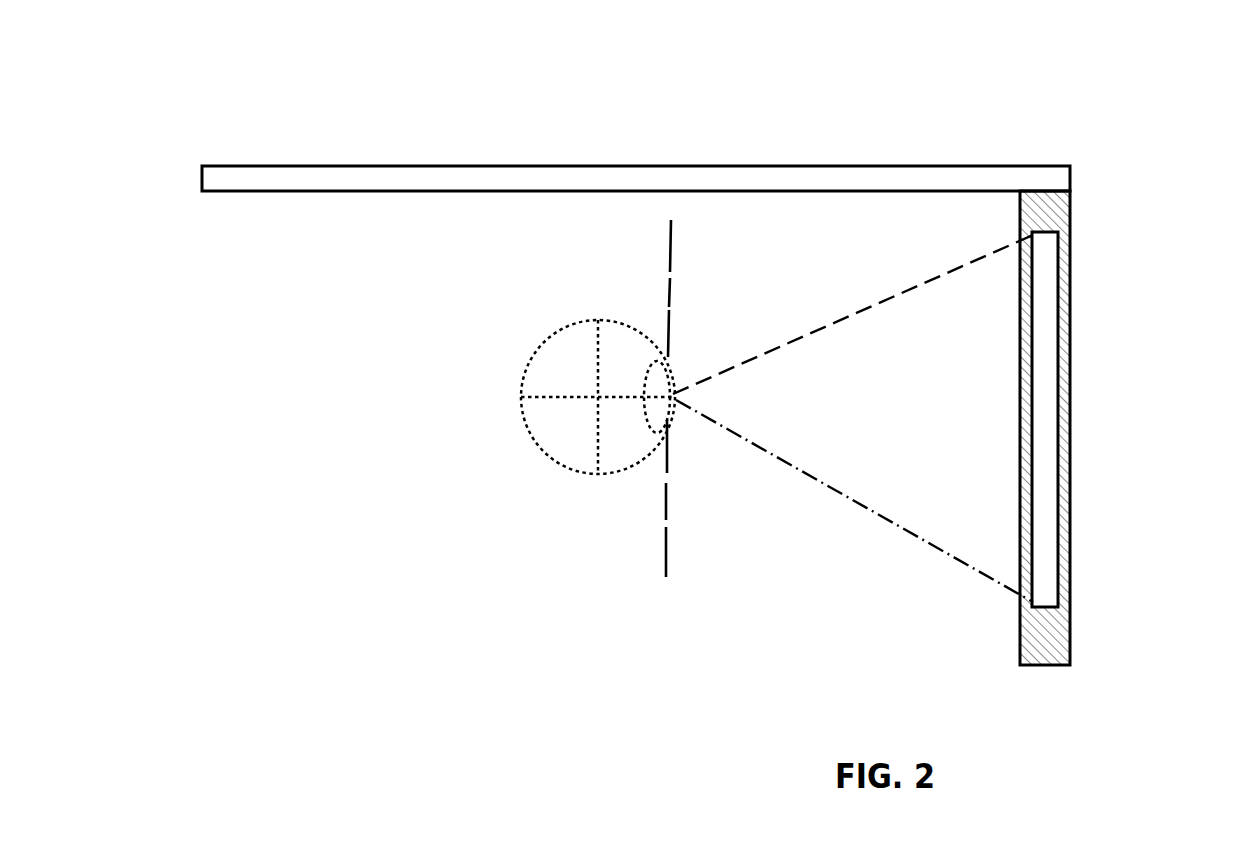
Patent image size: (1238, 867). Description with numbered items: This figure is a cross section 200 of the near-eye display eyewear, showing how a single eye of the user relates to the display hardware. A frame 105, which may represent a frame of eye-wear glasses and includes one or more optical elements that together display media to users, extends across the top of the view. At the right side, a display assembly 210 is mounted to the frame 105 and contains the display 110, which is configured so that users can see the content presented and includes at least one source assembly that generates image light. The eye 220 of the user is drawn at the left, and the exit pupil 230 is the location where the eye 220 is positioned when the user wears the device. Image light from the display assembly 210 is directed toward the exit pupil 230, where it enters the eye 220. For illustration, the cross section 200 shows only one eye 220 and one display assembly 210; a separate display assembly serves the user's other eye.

The cross section 200 is at (335, 52).
The frame 105 is at (926, 166).
The display assembly 210 is at (1042, 308).
The display 110 is at (1073, 543).
The eye 220 is at (561, 331).
The exit pupil 230 is at (666, 496).